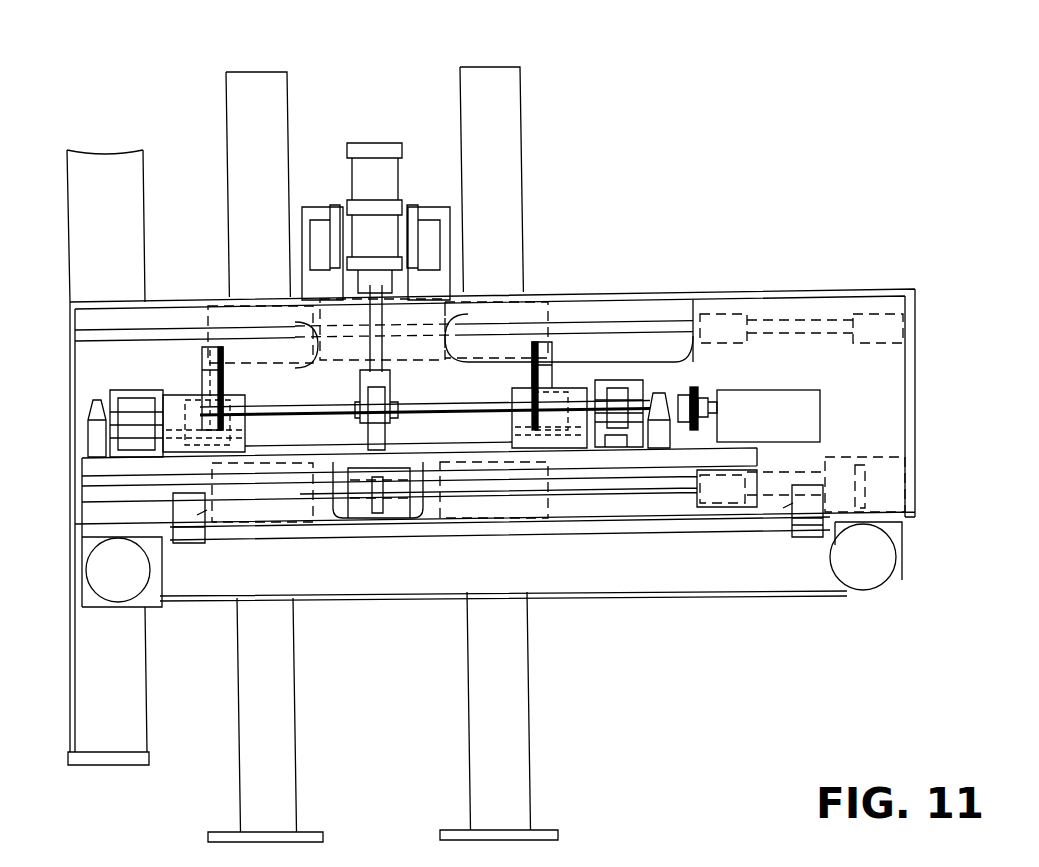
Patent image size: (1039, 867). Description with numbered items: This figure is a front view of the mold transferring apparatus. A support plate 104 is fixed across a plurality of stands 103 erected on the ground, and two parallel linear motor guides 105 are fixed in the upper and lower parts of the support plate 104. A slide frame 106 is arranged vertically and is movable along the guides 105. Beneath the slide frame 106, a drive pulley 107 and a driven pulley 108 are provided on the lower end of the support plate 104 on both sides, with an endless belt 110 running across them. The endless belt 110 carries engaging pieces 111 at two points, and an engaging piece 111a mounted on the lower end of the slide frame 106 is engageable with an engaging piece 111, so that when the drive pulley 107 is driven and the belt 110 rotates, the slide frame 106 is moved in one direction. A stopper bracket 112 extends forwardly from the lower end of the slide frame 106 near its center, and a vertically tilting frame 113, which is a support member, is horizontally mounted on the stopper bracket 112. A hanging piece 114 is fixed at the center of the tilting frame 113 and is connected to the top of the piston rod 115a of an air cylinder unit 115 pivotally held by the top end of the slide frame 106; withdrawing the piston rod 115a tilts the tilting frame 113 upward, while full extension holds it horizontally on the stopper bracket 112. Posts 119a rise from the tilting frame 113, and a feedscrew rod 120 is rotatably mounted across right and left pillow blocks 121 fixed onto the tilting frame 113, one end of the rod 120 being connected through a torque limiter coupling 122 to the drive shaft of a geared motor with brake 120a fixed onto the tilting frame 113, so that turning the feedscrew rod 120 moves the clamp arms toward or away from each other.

The stand 103 is at (278, 97).
The support plate 104 is at (682, 302).
The linear motor guide 105 is at (635, 327).
The slide frame 106 is at (770, 310).
The drive pulley 107 is at (858, 562).
The driven pulley 108 is at (107, 573).
The endless belt 110 is at (690, 540).
The engaging piece 111 is at (188, 548).
The engaging piece 111a is at (207, 515).
The stopper bracket 112 is at (397, 518).
The tilting frame 113 is at (103, 470).
The hanging piece 114 is at (380, 437).
The air cylinder unit 115 is at (388, 183).
The piston rod 115a is at (388, 314).
The post 119a is at (200, 372).
The feedscrew rod 120 is at (290, 415).
The geared motor with brake 120a is at (790, 397).
The pillow block 121 is at (97, 415).
The torque limiter coupling 122 is at (698, 387).